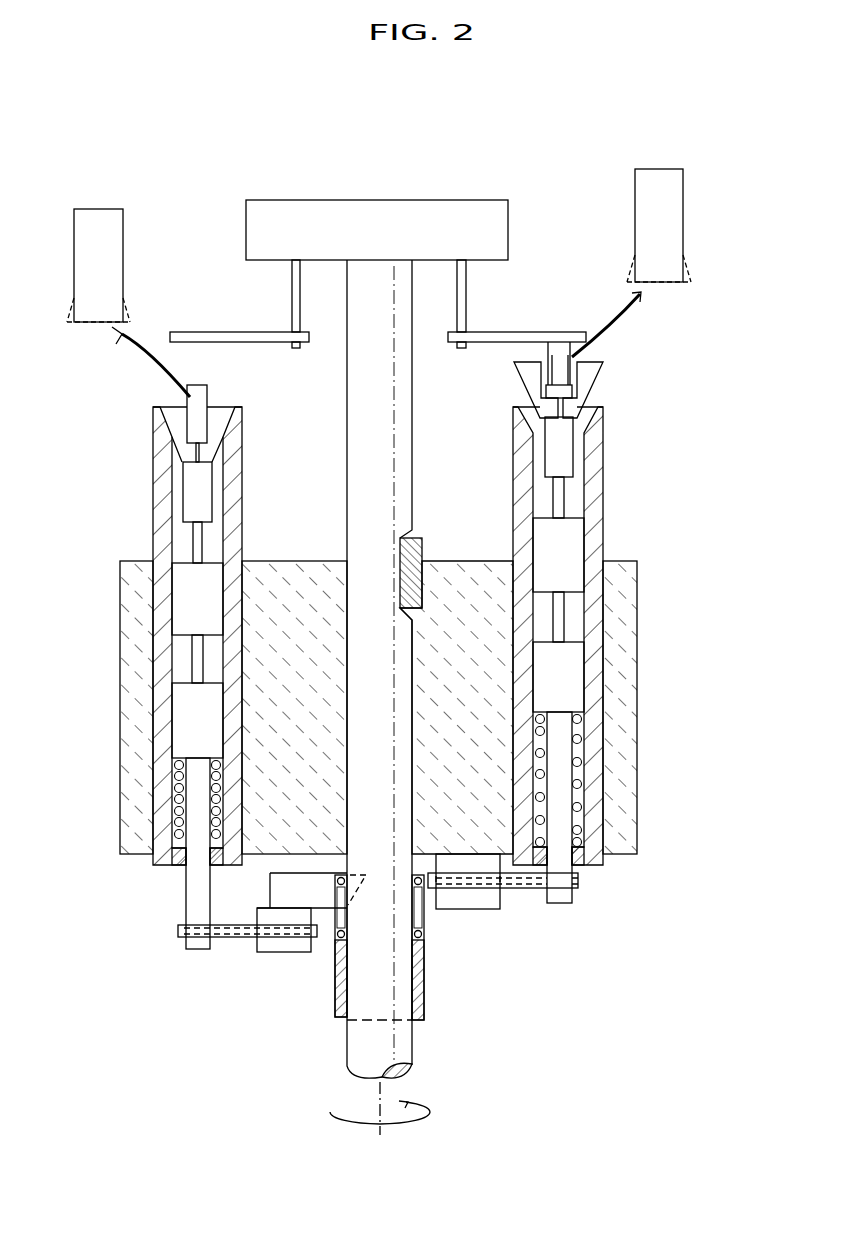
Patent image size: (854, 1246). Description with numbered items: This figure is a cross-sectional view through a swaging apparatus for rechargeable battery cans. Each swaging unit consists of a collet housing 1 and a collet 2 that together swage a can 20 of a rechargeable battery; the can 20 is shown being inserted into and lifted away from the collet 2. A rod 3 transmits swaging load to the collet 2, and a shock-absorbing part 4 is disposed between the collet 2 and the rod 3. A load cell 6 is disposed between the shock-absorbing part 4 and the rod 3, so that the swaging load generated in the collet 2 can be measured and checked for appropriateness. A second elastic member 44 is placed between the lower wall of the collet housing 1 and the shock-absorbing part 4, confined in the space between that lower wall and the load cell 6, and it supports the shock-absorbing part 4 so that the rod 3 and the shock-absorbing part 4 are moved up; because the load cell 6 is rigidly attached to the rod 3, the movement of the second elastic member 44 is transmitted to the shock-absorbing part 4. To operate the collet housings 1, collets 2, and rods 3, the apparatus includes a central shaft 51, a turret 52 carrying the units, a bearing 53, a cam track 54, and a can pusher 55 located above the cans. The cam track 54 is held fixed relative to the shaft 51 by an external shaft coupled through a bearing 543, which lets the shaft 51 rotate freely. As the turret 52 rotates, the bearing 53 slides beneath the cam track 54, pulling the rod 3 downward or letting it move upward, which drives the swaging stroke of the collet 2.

The collet housing 1 is at (598, 477).
The collet 2 is at (588, 372).
The rod 3 is at (560, 803).
The shock-absorbing part 4 is at (567, 540).
The load cell 6 is at (567, 672).
The can 20 is at (115, 255).
The second elastic member 44 is at (583, 777).
The shaft 51 is at (352, 1053).
The turret 52 is at (620, 622).
The bearing 53 is at (470, 902).
The cam track 54 is at (287, 893).
The can pusher 55 is at (500, 332).
The bearing 543 is at (422, 960).